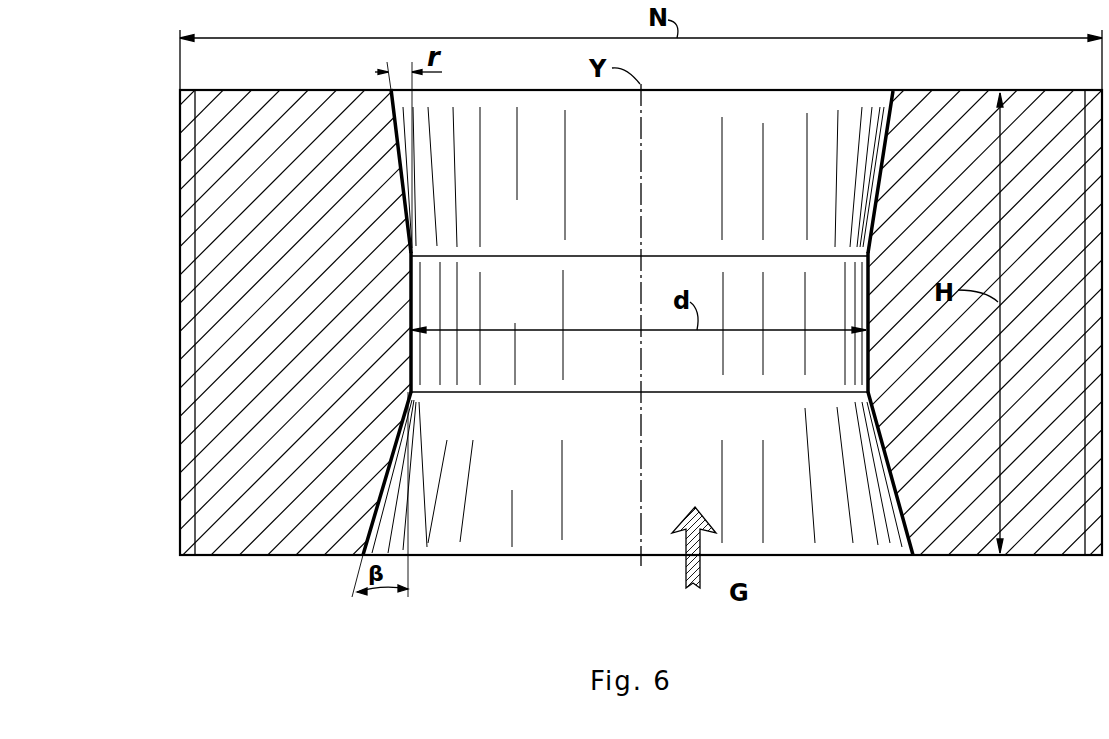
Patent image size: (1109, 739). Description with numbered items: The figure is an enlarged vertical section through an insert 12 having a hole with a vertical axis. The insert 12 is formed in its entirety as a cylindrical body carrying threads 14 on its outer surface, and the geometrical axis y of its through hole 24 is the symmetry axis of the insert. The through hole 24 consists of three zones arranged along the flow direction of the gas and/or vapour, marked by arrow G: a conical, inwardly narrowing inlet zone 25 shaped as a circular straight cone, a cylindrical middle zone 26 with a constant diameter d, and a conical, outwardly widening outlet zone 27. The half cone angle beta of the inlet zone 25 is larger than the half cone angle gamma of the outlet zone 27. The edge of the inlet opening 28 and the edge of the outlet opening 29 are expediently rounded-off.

The insert 12 is at (952, 558).
The threads 14 is at (185, 212).
The through hole 24 is at (865, 395).
The inlet zone 25 is at (539, 481).
The middle zone 26 is at (543, 308).
The outlet zone 27 is at (543, 231).
The inlet opening 28 is at (638, 581).
The outlet opening 29 is at (535, 88).